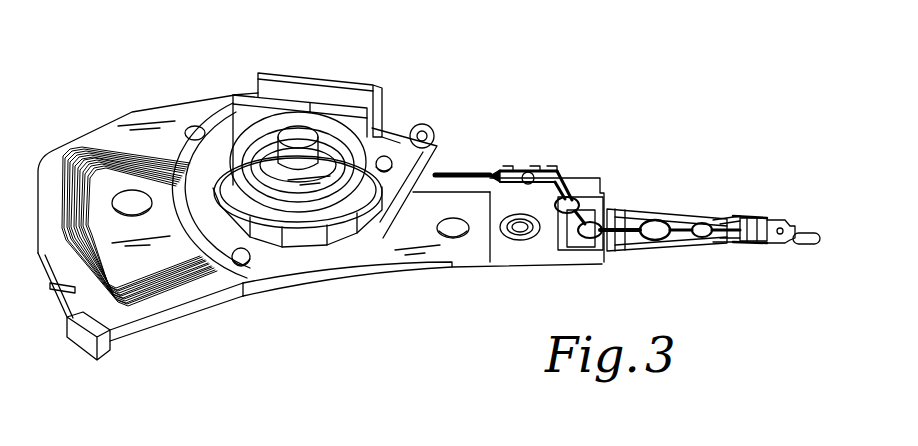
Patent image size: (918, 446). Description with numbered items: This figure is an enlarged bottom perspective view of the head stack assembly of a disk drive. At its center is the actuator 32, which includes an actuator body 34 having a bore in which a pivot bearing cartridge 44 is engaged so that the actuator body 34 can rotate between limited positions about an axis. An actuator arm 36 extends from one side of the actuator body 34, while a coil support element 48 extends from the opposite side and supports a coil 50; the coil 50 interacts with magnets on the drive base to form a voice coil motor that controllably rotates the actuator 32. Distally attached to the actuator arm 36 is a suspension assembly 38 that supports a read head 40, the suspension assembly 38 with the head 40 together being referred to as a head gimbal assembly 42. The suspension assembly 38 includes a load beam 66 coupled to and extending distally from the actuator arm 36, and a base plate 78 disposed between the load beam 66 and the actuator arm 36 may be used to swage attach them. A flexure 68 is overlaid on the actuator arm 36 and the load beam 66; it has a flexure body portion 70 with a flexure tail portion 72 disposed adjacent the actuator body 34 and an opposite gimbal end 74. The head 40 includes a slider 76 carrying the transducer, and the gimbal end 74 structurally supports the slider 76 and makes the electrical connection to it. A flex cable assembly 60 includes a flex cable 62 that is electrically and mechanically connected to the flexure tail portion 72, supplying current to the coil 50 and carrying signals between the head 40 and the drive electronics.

The actuator 32 is at (260, 287).
The actuator body 34 is at (307, 273).
The actuator arm 36 is at (457, 252).
The suspension assembly 38 is at (675, 218).
The read head 40 is at (752, 242).
The head gimbal assembly 42 is at (713, 205).
The pivot bearing cartridge 44 is at (263, 155).
The coil support element 48 is at (52, 160).
The coil 50 is at (100, 150).
The flex cable assembly 60 is at (270, 102).
The flex cable 62 is at (328, 76).
The load beam 66 is at (700, 247).
The flexure 68 is at (492, 170).
The flexure body portion 70 is at (563, 168).
The flexure tail portion 72 is at (453, 170).
The gimbal end 74 is at (737, 205).
The slider 76 is at (757, 225).
The base plate 78 is at (547, 257).